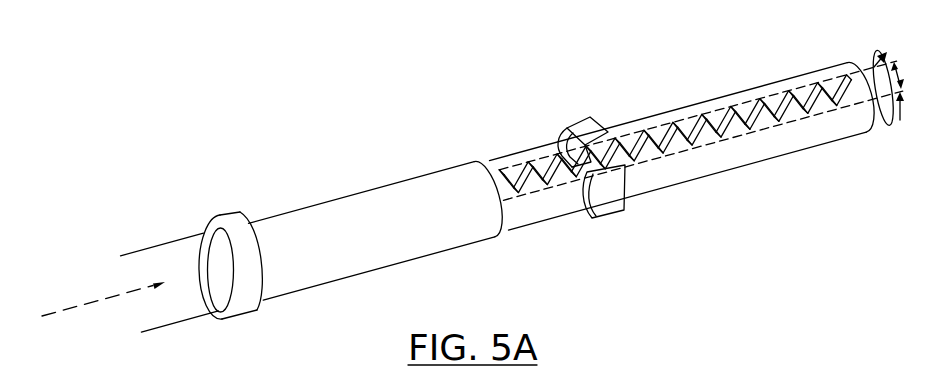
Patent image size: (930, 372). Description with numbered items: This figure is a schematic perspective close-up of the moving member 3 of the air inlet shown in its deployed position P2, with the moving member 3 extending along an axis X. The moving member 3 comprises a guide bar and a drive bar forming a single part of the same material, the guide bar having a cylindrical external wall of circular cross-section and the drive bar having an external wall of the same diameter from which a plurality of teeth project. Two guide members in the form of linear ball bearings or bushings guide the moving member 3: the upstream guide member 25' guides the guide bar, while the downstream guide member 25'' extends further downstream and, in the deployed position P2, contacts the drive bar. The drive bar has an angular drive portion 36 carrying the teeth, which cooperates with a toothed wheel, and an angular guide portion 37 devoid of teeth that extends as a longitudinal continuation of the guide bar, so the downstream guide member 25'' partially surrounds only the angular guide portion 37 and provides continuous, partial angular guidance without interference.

The moving member 3 is at (410, 113).
The upstream guide member 25' is at (230, 236).
The downstream guide member 25'' is at (591, 138).
The angular drive portion 36 is at (902, 70).
The angular guide portion 37 is at (913, 113).
The deployed position P2 is at (72, 65).
The longitudinal axis X is at (91, 307).